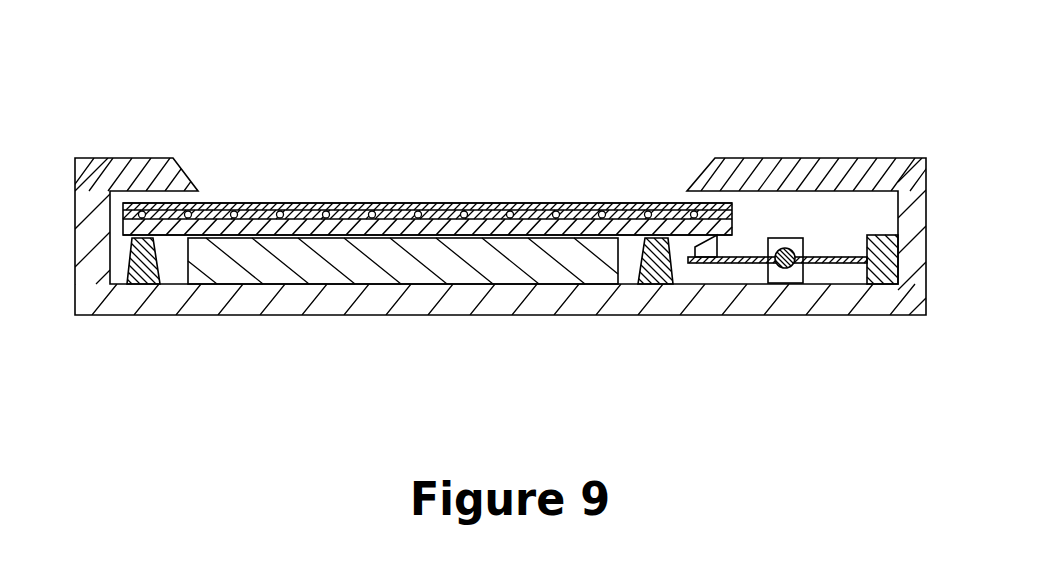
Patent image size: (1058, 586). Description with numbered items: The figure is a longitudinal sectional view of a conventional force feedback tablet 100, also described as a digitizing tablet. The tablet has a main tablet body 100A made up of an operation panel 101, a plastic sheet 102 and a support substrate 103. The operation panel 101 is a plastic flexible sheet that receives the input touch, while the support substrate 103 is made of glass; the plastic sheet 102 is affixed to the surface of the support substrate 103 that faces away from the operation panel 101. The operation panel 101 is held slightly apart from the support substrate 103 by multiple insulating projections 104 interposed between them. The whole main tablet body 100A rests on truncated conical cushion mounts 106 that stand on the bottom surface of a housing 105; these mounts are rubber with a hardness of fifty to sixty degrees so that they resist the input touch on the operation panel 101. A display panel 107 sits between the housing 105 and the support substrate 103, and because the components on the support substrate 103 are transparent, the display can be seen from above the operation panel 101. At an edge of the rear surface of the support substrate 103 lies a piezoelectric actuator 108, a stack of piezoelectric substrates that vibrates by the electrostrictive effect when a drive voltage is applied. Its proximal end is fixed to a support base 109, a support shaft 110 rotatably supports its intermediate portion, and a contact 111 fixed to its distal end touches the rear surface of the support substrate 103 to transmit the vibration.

The force feedback tablet 100 is at (492, 221).
The main tablet body 100A is at (427, 156).
The operation panel 101 is at (460, 203).
The plastic sheet 102 is at (502, 203).
The support substrate 103 is at (520, 205).
The insulating projections 104 is at (237, 203).
The housing 105 is at (475, 300).
The cushion mounts 106 is at (148, 270).
The display panel 107 is at (397, 262).
The piezoelectric actuator 108 is at (820, 263).
The support base 109 is at (880, 265).
The support shaft 110 is at (785, 250).
The contact 111 is at (708, 245).